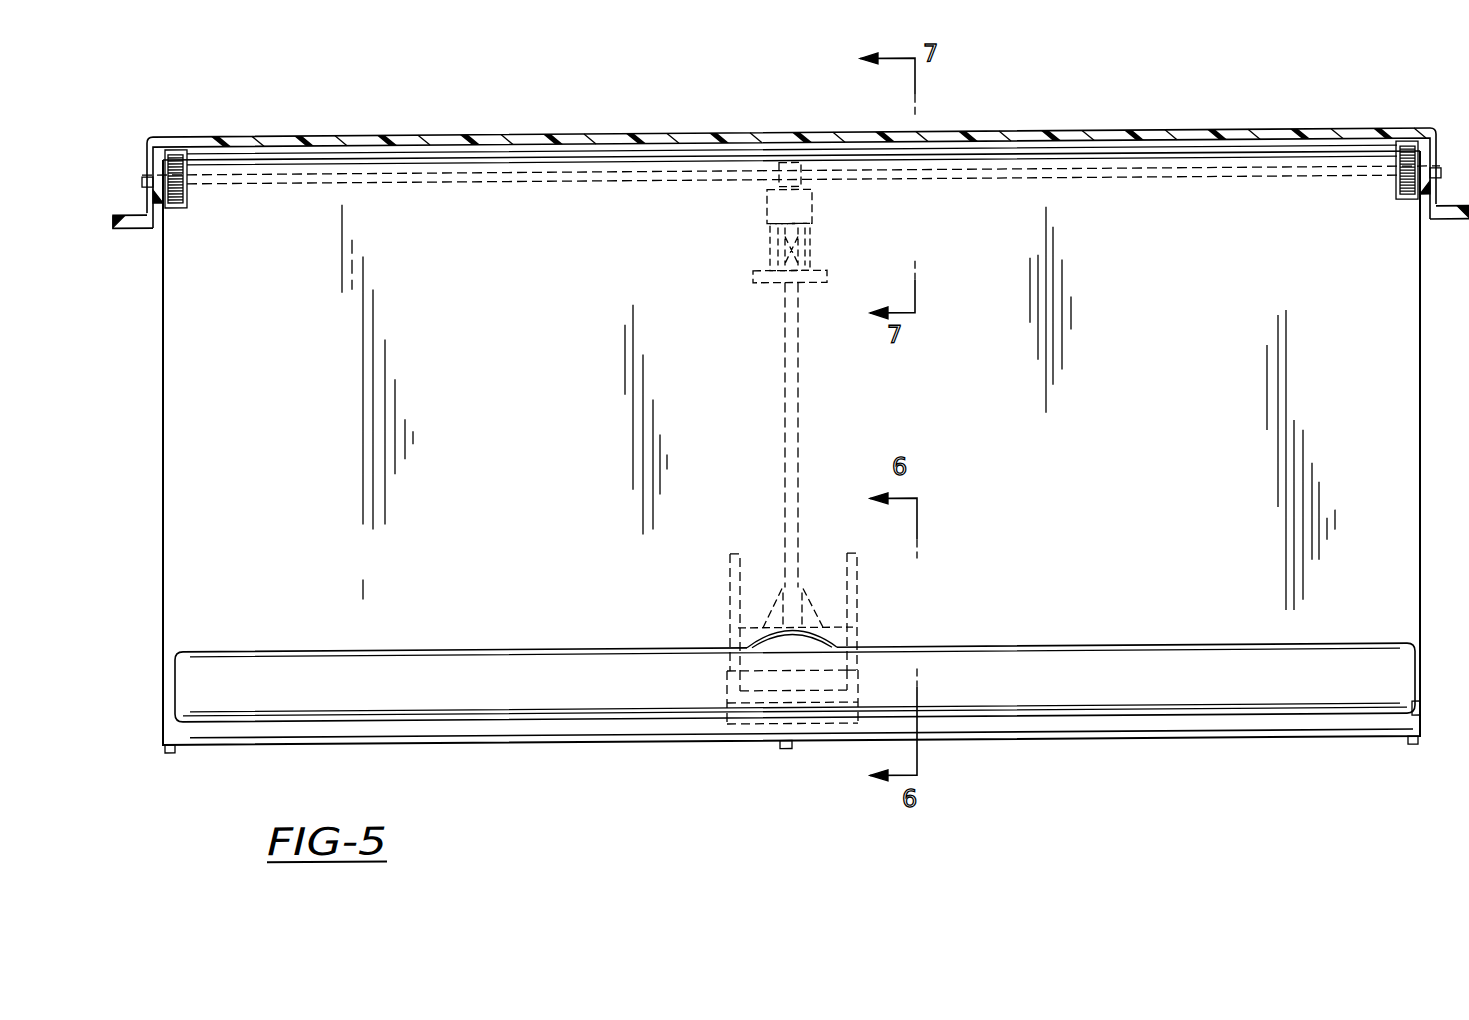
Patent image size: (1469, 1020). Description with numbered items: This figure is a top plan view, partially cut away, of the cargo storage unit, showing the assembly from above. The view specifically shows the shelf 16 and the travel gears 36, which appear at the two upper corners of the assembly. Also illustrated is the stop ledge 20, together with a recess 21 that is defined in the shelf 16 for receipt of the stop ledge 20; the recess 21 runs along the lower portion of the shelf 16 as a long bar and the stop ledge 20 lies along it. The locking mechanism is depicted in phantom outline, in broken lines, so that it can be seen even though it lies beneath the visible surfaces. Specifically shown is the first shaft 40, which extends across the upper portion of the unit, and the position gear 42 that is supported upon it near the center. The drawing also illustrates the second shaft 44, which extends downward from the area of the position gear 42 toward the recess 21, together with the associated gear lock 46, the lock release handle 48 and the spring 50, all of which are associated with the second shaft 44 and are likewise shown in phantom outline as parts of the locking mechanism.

The shelf 16 is at (520, 446).
The stop ledge 20 is at (593, 716).
The recess 21 is at (528, 698).
The travel gears 36 is at (180, 153).
The first shaft 40 is at (595, 180).
The position gear 42 is at (788, 172).
The second shaft 44 is at (790, 373).
The gear lock 46 is at (765, 204).
The lock release handle 48 is at (832, 688).
The spring 50 is at (770, 247).